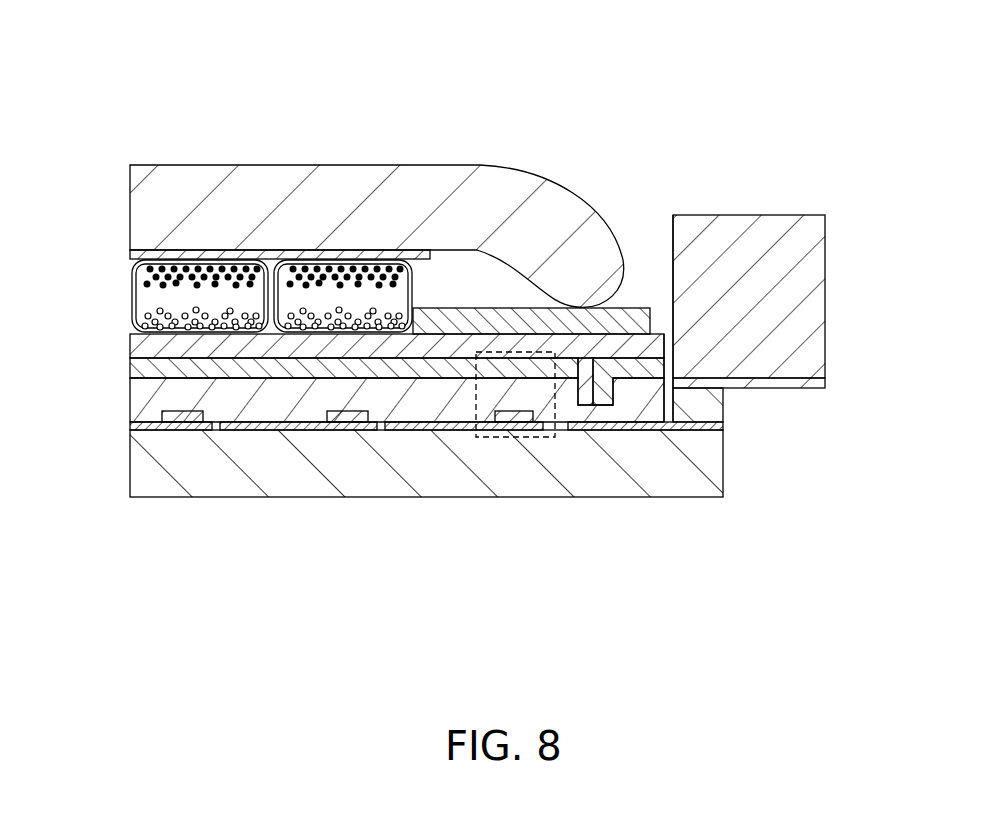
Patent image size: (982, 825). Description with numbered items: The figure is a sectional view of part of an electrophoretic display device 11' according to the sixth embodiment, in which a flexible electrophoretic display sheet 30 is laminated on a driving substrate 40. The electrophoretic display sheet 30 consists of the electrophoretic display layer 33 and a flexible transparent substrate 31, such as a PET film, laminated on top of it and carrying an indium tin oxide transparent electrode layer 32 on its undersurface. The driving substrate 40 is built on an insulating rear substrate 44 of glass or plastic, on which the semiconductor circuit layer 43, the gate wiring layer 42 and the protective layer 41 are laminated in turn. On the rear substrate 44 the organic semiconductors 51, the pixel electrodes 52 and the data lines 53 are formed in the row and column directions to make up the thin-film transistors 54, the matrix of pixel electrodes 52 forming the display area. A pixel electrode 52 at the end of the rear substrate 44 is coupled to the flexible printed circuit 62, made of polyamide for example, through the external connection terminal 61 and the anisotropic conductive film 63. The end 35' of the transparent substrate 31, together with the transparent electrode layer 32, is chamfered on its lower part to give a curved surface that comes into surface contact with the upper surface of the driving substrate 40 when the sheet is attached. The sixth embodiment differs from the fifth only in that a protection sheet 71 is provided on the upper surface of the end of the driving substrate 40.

The electrophoretic display device 11' is at (670, 60).
The electrophoretic display sheet 30 is at (45, 200).
The transparent substrate 31 is at (138, 190).
The transparent electrode layer 32 is at (133, 252).
The electrophoretic display layer 33 is at (142, 293).
The end of the transparent substrate 35' is at (625, 189).
The driving substrate 40 is at (45, 355).
The protective layer 41 is at (130, 350).
The gate wiring layer 42 is at (130, 373).
The semiconductor circuit layer 43 is at (130, 392).
The rear substrate 44 is at (130, 472).
The organic semiconductor 51 is at (188, 432).
The pixel electrode 52 is at (287, 432).
The data line 53 is at (367, 424).
The thin-film transistor 54 is at (555, 410).
The external connection terminal 61 is at (707, 395).
The flexible printed circuit 62 is at (810, 267).
The anisotropic conductive film 63 is at (828, 382).
The protection sheet 71 is at (468, 327).